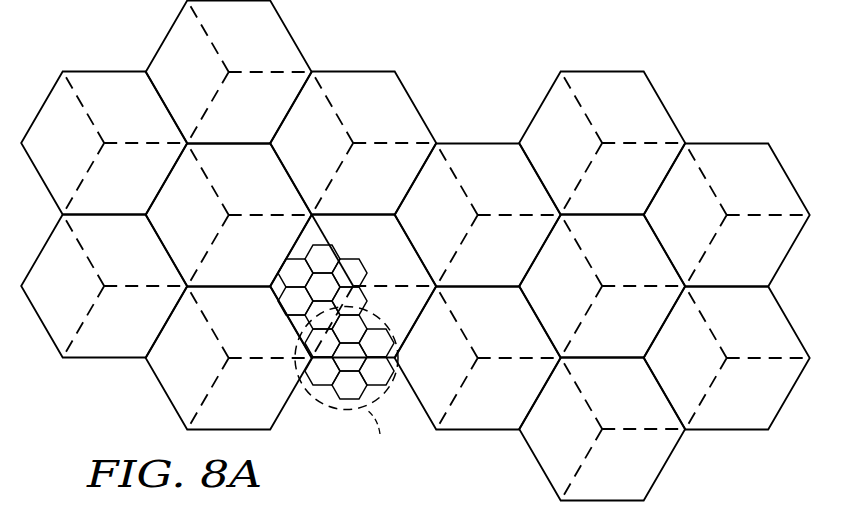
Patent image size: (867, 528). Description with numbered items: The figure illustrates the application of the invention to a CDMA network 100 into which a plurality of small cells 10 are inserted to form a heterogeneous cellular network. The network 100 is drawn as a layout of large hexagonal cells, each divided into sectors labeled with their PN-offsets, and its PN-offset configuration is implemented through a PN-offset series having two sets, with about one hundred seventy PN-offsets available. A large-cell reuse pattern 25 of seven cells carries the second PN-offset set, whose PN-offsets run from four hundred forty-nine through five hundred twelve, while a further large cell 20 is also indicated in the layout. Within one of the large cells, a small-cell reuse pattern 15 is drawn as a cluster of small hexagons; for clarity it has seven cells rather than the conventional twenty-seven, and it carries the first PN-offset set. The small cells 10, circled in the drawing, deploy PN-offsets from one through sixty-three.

The CDMA network 100 is at (433, 251).
The large-cell reuse pattern 25 is at (804, 164).
The cell 20 is at (798, 313).
The small-cell reuse pattern 15 is at (343, 243).
The small cells 10 is at (323, 391).